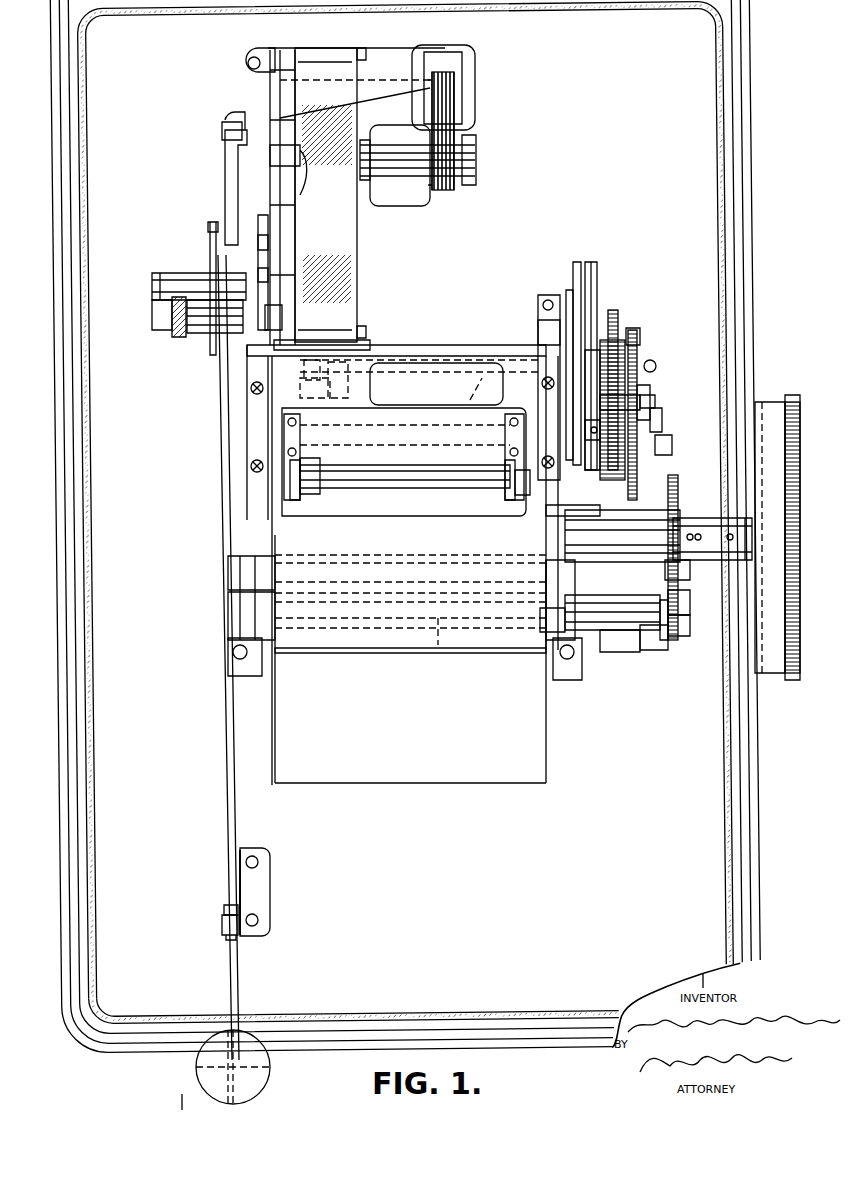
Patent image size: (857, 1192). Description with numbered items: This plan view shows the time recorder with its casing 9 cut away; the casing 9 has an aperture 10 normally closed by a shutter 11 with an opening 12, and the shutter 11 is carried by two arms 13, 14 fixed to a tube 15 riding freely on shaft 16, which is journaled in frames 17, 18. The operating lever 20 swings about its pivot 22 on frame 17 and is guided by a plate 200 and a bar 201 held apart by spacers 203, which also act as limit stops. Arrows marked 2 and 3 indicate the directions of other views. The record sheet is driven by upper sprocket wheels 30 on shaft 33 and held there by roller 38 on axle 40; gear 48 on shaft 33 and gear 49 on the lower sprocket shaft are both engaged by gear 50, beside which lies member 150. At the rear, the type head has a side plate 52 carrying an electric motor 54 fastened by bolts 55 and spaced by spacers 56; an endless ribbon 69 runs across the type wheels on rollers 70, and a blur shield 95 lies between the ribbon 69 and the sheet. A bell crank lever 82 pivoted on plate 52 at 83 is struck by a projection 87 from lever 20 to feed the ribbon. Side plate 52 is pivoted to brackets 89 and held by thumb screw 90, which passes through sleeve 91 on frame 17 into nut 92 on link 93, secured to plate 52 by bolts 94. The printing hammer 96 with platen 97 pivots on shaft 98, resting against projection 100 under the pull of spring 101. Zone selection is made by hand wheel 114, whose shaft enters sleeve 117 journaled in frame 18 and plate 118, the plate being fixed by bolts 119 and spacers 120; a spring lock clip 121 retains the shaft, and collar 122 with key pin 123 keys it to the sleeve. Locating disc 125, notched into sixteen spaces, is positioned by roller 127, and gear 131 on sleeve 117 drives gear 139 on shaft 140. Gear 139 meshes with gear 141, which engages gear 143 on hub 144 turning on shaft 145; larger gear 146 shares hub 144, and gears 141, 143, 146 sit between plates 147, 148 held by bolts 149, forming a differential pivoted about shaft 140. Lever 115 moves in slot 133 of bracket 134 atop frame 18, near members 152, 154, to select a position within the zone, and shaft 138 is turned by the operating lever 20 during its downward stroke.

The section line 2 is at (140, 1102).
The section line 3 is at (706, 981).
The casing 9 is at (722, 828).
The aperture 10 is at (372, 397).
The shutter 11 is at (333, 656).
The opening 12 is at (327, 512).
The arm 13 is at (270, 652).
The arm 14 is at (546, 652).
The tube 15 is at (396, 618).
The shaft 16 is at (438, 645).
The frame 17 is at (258, 678).
The frame 18 is at (556, 680).
The operating lever 20 is at (224, 772).
The pivot 22 is at (192, 274).
The upper sprocket wheels 30 is at (506, 449).
The shaft 33 is at (416, 440).
The roller 38 is at (505, 490).
The axle 40 is at (334, 483).
The gear 48 is at (590, 425).
The gear 49 is at (590, 352).
The gear 50 is at (518, 498).
The side plate 52 is at (270, 93).
The electric motor 54 is at (470, 98).
The bolts 55 is at (378, 150).
The spacers 56 is at (300, 172).
The endless ribbon 69 is at (357, 290).
The rollers 70 is at (366, 332).
The bell crank lever 82 is at (225, 185).
The pivot 83 is at (222, 130).
The projection 87 is at (210, 246).
The brackets 89 is at (252, 50).
The thumb screw 90 is at (176, 334).
The sleeve 91 is at (208, 338).
The nut 92 is at (282, 316).
The link 93 is at (264, 222).
The bolts 94 is at (260, 258).
The blur shield 95 is at (372, 345).
The printing hammer 96 is at (338, 396).
The platen 97 is at (380, 374).
The shaft 98 is at (461, 390).
The projection 100 is at (300, 393).
The spring 101 is at (304, 377).
The hand wheel 114 is at (788, 402).
The lever 115 is at (574, 300).
The sleeve 117 is at (540, 622).
The plate 118 is at (640, 598).
The bolts 119 is at (664, 640).
The spacers 120 is at (652, 650).
The spring lock clip 121 is at (565, 542).
The collar 122 is at (686, 566).
The key pin 123 is at (690, 520).
The locating disc 125 is at (690, 602).
The roller 127 is at (686, 636).
The gear 131 is at (628, 650).
The slot 133 is at (540, 330).
The bracket 134 is at (540, 300).
The shaft 138 is at (346, 564).
The gear 139 is at (640, 476).
The shaft 140 is at (672, 442).
The gear 141 is at (640, 393).
The gear 143 is at (640, 342).
The hub 144 is at (620, 350).
The shaft 145 is at (654, 362).
The gear 146 is at (612, 308).
The plate 147 is at (645, 405).
The plate 148 is at (644, 400).
The bolts 149 is at (680, 420).
The shaft 150 is at (562, 510).
The plate 152 is at (594, 300).
The plate 154 is at (577, 290).
The plate 200 is at (270, 897).
The bar 201 is at (224, 936).
The spacers 203 is at (228, 908).